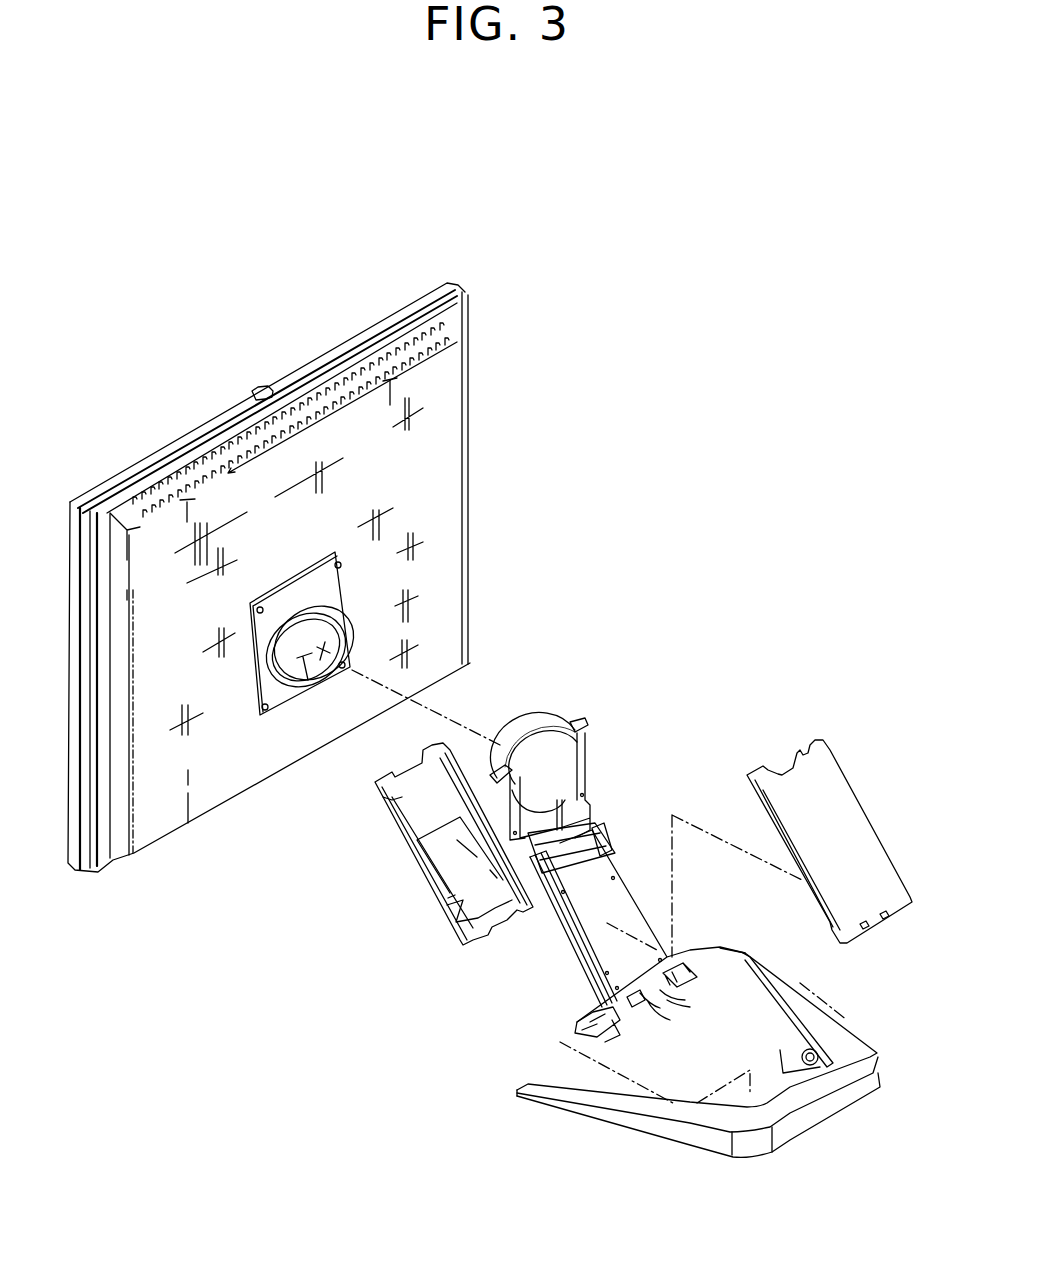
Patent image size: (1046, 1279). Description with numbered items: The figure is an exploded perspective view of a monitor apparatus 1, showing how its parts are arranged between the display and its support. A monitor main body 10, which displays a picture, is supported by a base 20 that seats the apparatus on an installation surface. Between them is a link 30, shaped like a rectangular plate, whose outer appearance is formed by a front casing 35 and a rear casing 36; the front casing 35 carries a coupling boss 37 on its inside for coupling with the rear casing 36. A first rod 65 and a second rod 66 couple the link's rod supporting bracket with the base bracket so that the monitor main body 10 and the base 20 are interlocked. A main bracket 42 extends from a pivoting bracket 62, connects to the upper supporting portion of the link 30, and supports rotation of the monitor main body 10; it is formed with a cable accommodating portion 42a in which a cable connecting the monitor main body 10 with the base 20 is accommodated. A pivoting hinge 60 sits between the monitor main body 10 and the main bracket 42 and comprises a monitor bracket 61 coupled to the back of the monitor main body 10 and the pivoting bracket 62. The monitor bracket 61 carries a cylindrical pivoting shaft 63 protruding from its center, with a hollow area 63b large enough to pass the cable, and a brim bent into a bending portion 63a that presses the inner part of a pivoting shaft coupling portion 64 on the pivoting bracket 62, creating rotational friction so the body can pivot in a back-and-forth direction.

The monitor apparatus 1 is at (254, 325).
The monitor main body 10 is at (468, 392).
The base 20 is at (693, 1145).
The link 30 is at (647, 930).
The front casing 35 is at (392, 812).
The rear casing 36 is at (873, 828).
The coupling boss 37 is at (447, 905).
The main bracket 42 is at (600, 836).
The cable accommodating portion 42a is at (582, 800).
The pivoting hinge 60 is at (549, 668).
The monitor bracket 61 is at (350, 565).
The pivoting bracket 62 is at (535, 720).
The pivoting shaft 63 is at (340, 608).
The bending portion 63a is at (305, 655).
The hollow area 63b is at (312, 673).
The pivoting shaft coupling portion 64 is at (582, 745).
The first rod 65 is at (583, 960).
The second rod 66 is at (562, 930).